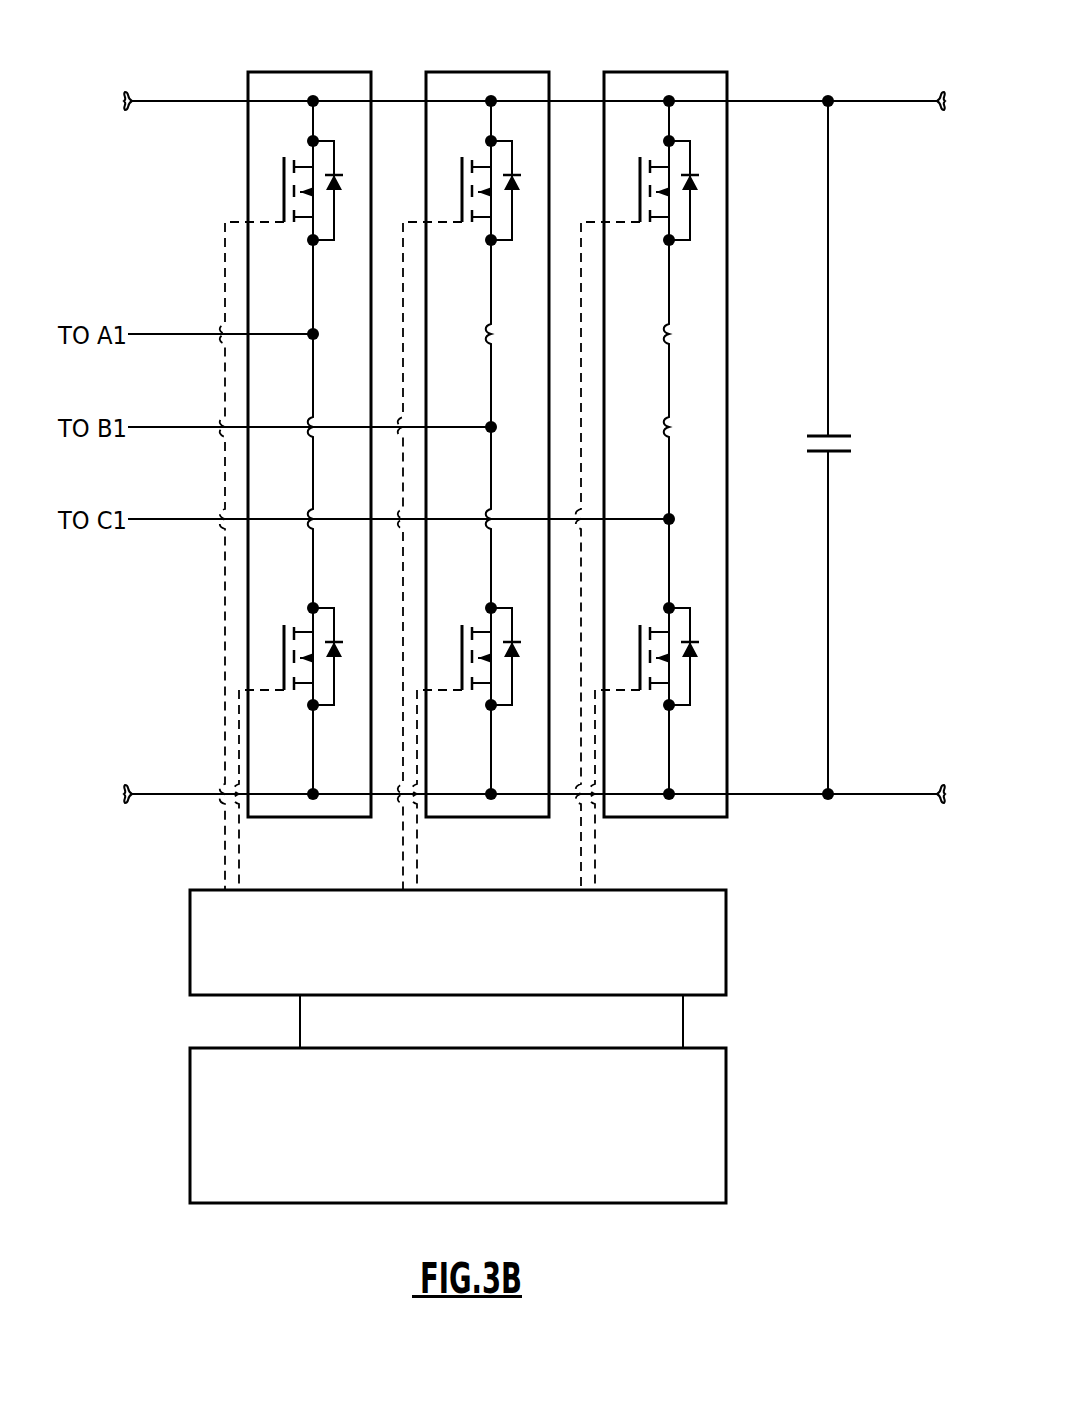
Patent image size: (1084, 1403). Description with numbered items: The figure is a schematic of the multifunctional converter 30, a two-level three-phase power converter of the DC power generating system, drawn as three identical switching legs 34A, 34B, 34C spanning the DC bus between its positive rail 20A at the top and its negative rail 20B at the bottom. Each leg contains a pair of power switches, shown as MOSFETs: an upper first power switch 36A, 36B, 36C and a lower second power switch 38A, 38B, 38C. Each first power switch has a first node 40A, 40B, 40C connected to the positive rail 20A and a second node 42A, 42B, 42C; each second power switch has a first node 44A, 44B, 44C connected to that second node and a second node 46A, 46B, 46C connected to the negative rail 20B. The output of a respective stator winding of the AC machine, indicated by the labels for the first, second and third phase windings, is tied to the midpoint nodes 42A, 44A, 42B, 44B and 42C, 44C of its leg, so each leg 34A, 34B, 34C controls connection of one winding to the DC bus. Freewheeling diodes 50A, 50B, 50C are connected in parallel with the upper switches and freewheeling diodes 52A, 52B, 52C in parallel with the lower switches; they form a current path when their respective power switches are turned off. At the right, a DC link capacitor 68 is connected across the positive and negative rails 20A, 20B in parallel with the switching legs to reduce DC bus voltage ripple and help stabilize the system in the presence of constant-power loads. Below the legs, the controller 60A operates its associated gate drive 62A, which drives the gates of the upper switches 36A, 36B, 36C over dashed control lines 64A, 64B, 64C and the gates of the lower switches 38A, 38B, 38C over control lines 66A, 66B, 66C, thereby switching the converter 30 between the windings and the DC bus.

The multifunctional converter 30 is at (809, 56).
The positive rail 20A is at (873, 102).
The negative rail 20B is at (873, 795).
The switching leg 34A is at (325, 66).
The switching leg 34B is at (490, 66).
The switching leg 34C is at (667, 66).
The first power switch 36A is at (279, 187).
The first power switch 36B is at (457, 187).
The first power switch 36C is at (635, 187).
The second power switch 38A is at (279, 628).
The second power switch 38B is at (457, 628).
The second power switch 38C is at (635, 628).
The first node 40A is at (302, 134).
The first node 40B is at (480, 134).
The first node 40C is at (658, 134).
The second node 42A is at (309, 252).
The second node 42B is at (487, 252).
The second node 42C is at (665, 252).
The first node 44A is at (322, 604).
The first node 44B is at (500, 604).
The first node 44C is at (678, 604).
The second node 46A is at (309, 718).
The second node 46B is at (487, 718).
The second node 46C is at (665, 718).
The freewheeling diode 50A is at (343, 207).
The freewheeling diode 50B is at (521, 207).
The freewheeling diode 50C is at (699, 207).
The freewheeling diode 52A is at (343, 676).
The freewheeling diode 52B is at (521, 676).
The freewheeling diode 52C is at (699, 676).
The controller 60A is at (190, 1135).
The gate drive 62A is at (190, 962).
The control line 64A is at (224, 875).
The control line 64B is at (402, 875).
The control line 64C is at (580, 875).
The control line 66A is at (238, 849).
The control line 66B is at (416, 849).
The control line 66C is at (594, 849).
The DC link capacitor 68 is at (838, 435).